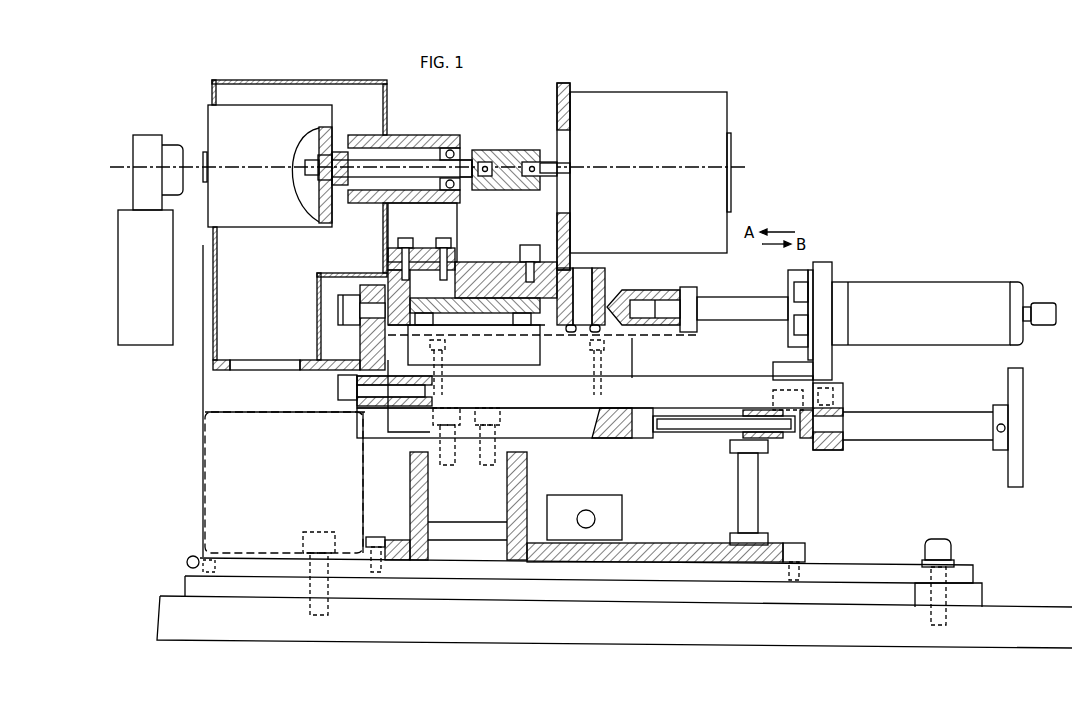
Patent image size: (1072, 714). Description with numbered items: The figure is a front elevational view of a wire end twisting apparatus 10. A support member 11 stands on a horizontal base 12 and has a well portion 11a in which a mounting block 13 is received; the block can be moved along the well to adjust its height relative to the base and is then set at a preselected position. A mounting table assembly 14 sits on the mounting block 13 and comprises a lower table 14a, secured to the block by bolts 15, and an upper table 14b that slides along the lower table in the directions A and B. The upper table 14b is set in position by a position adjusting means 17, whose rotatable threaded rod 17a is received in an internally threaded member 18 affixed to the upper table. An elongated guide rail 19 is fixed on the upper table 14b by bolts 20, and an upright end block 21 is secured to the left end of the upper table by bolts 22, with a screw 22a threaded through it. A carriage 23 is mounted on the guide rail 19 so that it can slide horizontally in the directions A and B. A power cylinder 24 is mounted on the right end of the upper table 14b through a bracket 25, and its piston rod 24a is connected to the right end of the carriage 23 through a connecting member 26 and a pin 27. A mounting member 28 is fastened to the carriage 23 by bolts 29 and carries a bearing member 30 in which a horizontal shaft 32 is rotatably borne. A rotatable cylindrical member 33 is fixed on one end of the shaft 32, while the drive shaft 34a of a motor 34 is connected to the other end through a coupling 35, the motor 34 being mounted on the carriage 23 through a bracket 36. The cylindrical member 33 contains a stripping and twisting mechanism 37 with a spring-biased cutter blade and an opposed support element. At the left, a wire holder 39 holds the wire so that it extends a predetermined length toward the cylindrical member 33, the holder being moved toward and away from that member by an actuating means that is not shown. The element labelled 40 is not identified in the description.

The wire end twisting apparatus 10 is at (783, 145).
The support member 11 is at (680, 548).
The well portion 11a is at (527, 488).
The horizontal base 12 is at (838, 565).
The mounting block 13 is at (495, 470).
The mounting table assembly 14 is at (630, 432).
The lower table 14a is at (583, 430).
The upper table 14b is at (715, 380).
The bolts 15 is at (487, 408).
The position adjusting means 17 is at (913, 440).
The threaded rod 17a is at (708, 432).
The internally threaded member 18 is at (775, 440).
The guide rail 19 is at (628, 367).
The bolts 20 is at (445, 345).
The end block 21 is at (362, 345).
The bolts 22 is at (345, 305).
The screw 22a is at (338, 390).
The carriage 23 is at (488, 268).
The power cylinder 24 is at (878, 292).
The piston rod 24a is at (712, 300).
The bracket 25 is at (828, 355).
The connecting member 26 is at (648, 297).
The pin 27 is at (590, 298).
The mounting member 28 is at (450, 218).
The bolts 29 is at (443, 238).
The bearing member 30 is at (400, 136).
The shaft 32 is at (425, 165).
The cylindrical member 33 is at (270, 108).
The motor 34 is at (643, 103).
The drive shaft 34a is at (548, 163).
The coupling 35 is at (505, 150).
The bracket 36 is at (564, 90).
The stripping and twisting mechanism 37 is at (202, 152).
The wire holder 39 is at (146, 135).
The cutting tool 40 is at (262, 166).